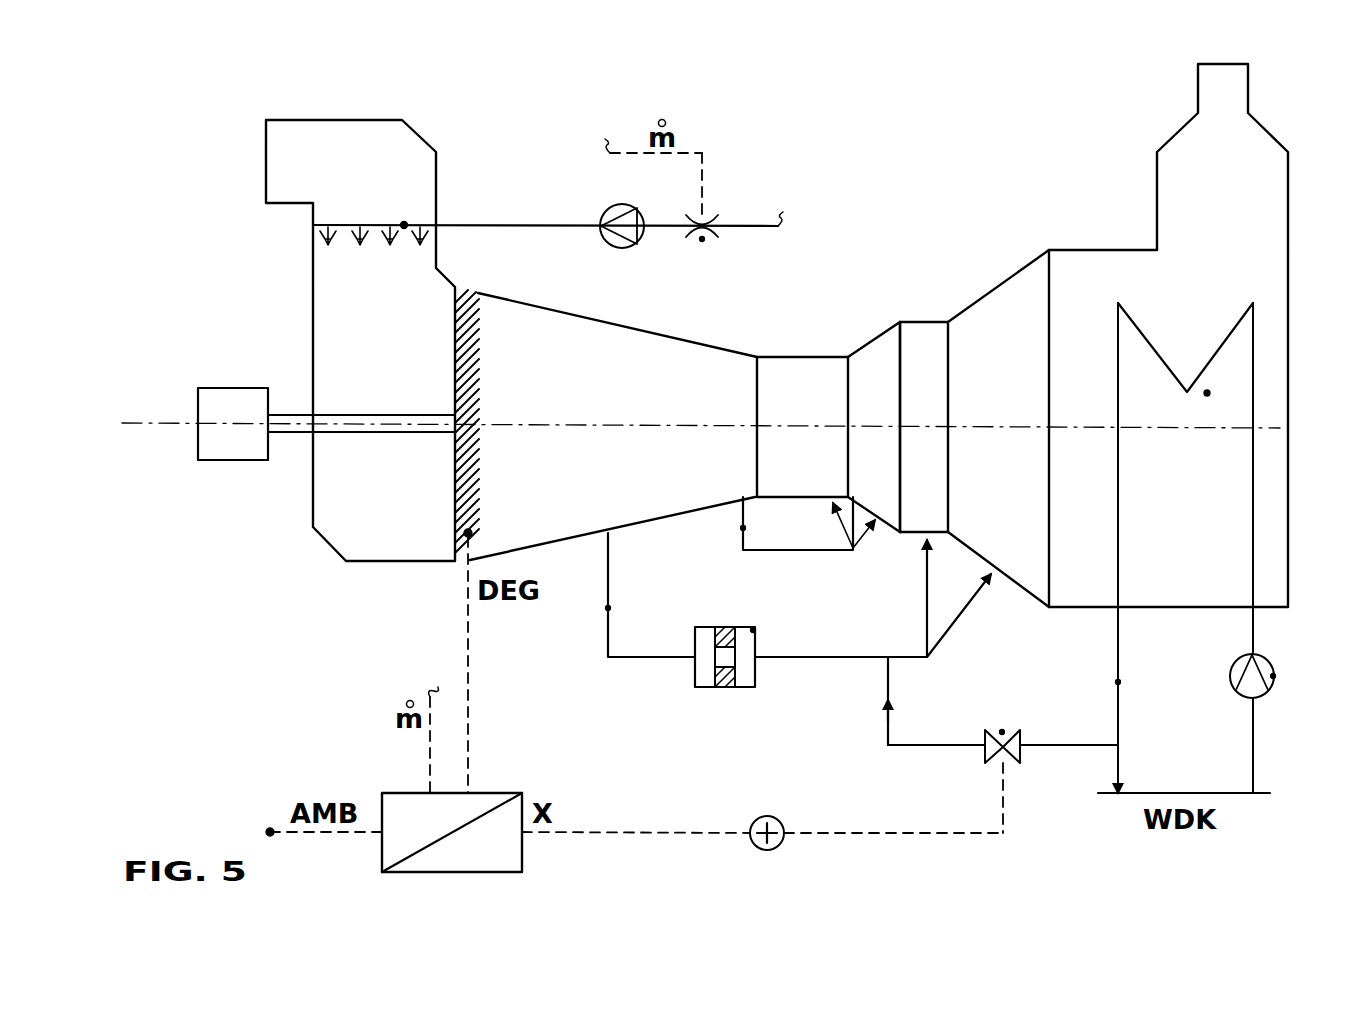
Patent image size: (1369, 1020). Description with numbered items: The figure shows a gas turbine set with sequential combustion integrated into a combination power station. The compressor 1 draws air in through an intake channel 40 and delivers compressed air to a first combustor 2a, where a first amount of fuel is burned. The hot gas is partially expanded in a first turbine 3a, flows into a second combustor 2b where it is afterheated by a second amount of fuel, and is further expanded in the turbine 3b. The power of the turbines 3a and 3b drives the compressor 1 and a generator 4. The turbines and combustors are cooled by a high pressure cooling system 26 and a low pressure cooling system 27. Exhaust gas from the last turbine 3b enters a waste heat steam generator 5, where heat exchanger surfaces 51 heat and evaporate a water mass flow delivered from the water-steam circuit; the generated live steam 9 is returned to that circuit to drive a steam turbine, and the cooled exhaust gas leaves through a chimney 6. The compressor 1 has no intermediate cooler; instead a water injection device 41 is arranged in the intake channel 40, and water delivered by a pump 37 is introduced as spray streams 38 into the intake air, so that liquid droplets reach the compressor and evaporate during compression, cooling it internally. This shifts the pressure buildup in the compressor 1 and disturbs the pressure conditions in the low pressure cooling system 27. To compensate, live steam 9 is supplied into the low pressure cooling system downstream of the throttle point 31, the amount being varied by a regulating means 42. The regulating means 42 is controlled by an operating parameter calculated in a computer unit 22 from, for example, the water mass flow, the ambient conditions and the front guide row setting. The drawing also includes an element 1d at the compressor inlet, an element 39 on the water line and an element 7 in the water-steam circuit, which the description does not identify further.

The compressor 1 is at (622, 402).
The compressor inlet wall 1d is at (472, 352).
The first combustor 2a is at (822, 402).
The second combustor 2b is at (946, 402).
The first turbine 3a is at (896, 402).
The turbine 3b is at (1013, 402).
The generator 4 is at (244, 438).
The waste heat steam generator 5 is at (1118, 295).
The chimney 6 is at (1233, 209).
The pump 7 is at (1273, 676).
The live steam 9 is at (1118, 682).
The computer unit 22 is at (522, 793).
The high pressure cooling system 26 is at (743, 528).
The low pressure cooling system 27 is at (608, 608).
The throttle point 31 is at (753, 630).
The pump 37 is at (634, 247).
The spray streams 38 is at (417, 243).
The control valve 39 is at (702, 239).
The intake channel 40 is at (395, 398).
The water injection device 41 is at (404, 225).
The regulating means 42 is at (1002, 732).
The heat exchanger surfaces 51 is at (1207, 393).